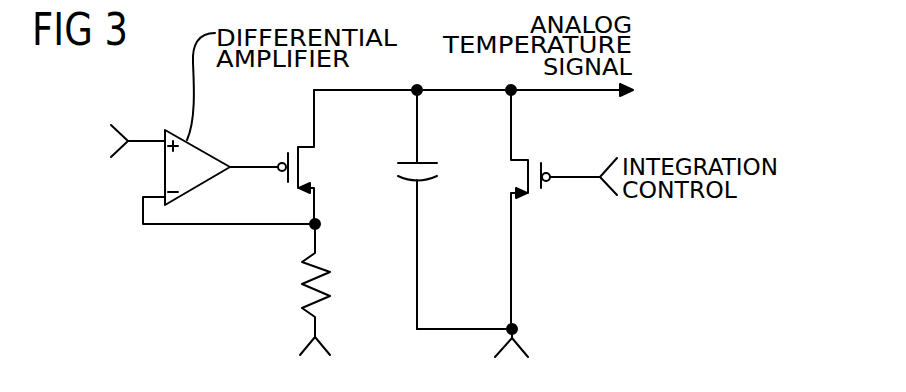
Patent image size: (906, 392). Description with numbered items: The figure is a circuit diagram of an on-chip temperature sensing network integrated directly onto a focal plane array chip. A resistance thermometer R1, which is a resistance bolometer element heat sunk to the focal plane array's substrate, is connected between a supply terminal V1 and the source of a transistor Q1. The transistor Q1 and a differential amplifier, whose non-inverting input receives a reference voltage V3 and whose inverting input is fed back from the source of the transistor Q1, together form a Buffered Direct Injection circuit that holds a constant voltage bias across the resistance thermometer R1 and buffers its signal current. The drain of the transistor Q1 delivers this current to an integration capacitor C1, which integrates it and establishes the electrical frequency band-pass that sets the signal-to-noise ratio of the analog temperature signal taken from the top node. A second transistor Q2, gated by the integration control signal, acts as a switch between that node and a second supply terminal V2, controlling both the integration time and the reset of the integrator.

The reference voltage input V3 to differential amplifier V3 is at (121, 142).
The transistor Q1 is at (285, 157).
The resistance thermometer R1 is at (330, 280).
The supply voltage V1 is at (315, 362).
The integration capacitor C1 is at (422, 209).
The transistor Q2 is at (564, 209).
The supply voltage V2 is at (511, 358).